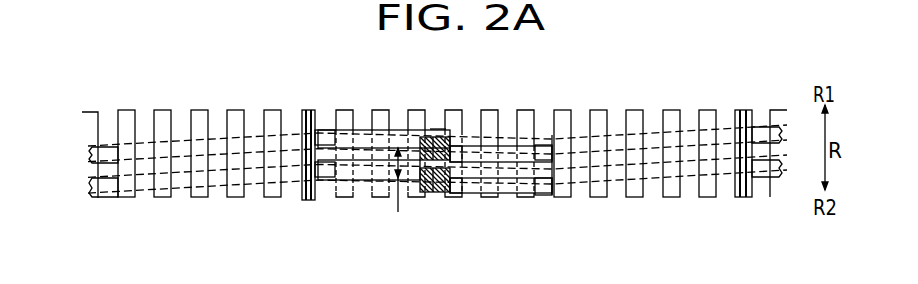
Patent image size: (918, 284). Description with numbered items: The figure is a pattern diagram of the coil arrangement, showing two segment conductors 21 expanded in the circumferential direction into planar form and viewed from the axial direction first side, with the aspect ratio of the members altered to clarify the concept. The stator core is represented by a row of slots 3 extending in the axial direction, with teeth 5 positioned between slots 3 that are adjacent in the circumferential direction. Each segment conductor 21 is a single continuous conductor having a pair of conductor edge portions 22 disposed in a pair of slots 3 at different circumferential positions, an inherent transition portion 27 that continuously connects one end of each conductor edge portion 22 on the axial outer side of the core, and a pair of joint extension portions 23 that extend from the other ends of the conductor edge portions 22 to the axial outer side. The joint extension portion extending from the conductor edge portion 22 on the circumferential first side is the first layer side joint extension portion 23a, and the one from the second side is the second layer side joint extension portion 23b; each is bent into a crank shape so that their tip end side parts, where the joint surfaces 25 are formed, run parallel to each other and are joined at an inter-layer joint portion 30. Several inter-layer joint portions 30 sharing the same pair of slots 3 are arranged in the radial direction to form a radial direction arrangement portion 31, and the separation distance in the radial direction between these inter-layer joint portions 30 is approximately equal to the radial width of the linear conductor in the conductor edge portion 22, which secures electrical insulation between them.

The slot 3 is at (315, 112).
The tooth 5 is at (270, 108).
The segment conductor 21 is at (365, 128).
The conductor edge portion 22 is at (120, 193).
The joint extension portion 23 is at (436, 161).
The first layer side joint extension portion 23a is at (528, 185).
The second layer side joint extension portion 23b is at (368, 148).
The joint surface 25 is at (432, 134).
The inherent transition portion 27 is at (218, 168).
The inter-layer joint portion 30 is at (460, 185).
The radial direction arrangement portion 31 is at (438, 122).